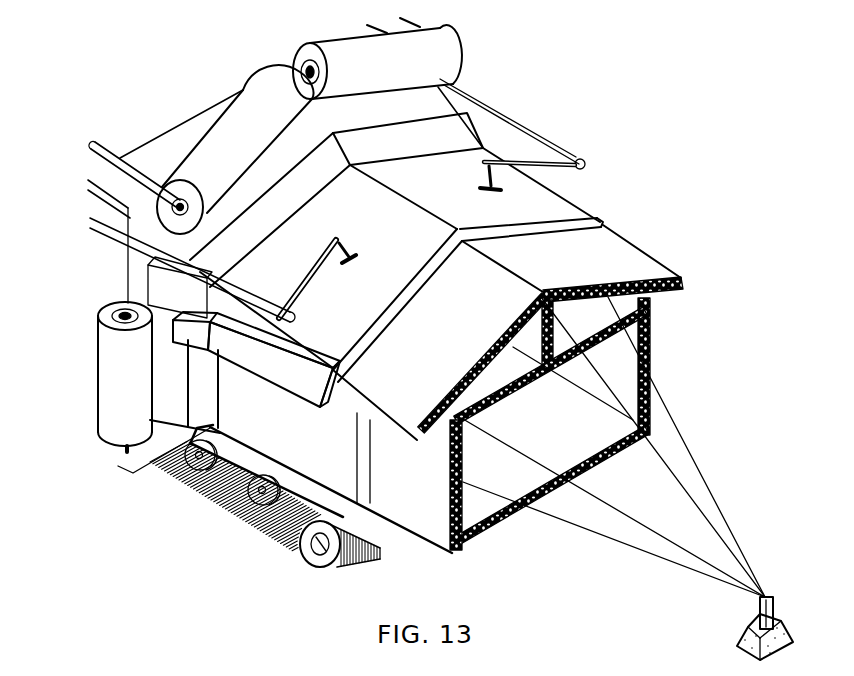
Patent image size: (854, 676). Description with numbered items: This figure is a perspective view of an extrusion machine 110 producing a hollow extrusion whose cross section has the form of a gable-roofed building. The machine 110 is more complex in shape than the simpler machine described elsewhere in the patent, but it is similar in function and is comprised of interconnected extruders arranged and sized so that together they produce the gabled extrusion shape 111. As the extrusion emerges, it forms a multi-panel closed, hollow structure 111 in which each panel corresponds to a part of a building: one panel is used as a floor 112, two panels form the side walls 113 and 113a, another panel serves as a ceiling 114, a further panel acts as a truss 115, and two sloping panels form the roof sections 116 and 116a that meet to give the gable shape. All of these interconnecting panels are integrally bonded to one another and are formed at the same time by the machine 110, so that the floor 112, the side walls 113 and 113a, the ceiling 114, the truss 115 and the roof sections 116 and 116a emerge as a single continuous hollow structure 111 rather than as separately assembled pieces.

The extrusion machine 110 is at (565, 200).
The hollow structure 111 is at (640, 262).
The floor 112 is at (570, 443).
The side wall 113 is at (640, 333).
The side wall 113a is at (413, 500).
The ceiling 114 is at (515, 388).
The truss 115 is at (533, 333).
The roof section 116 is at (672, 277).
The roof section 116a is at (417, 353).